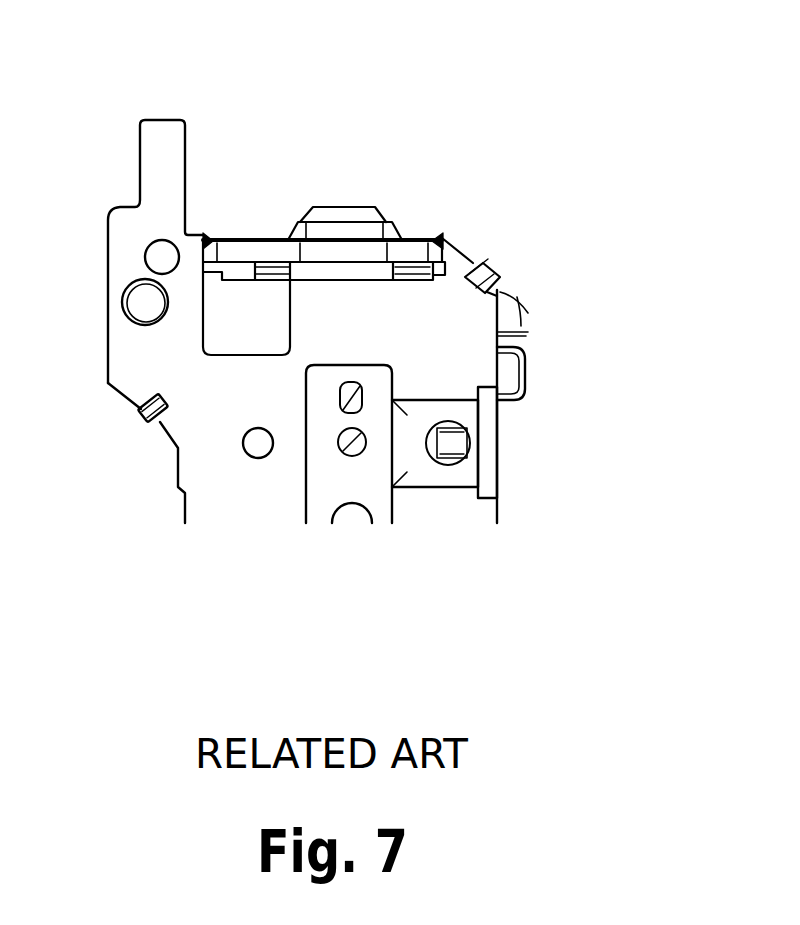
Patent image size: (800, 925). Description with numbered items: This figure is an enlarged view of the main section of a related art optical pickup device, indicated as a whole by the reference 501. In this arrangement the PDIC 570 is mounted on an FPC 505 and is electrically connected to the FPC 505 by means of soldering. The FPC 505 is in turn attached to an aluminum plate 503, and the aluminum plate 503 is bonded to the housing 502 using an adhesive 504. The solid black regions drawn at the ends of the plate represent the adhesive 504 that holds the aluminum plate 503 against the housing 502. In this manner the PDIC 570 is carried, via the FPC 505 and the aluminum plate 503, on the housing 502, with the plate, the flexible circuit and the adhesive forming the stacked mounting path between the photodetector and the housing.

The optical pickup unit (related art) 501 is at (670, 113).
The housing 502 is at (463, 246).
The aluminum plate 503 is at (415, 240).
The adhesive 504 is at (206, 234).
The FPC 505 is at (258, 240).
The PDIC 570 is at (347, 207).